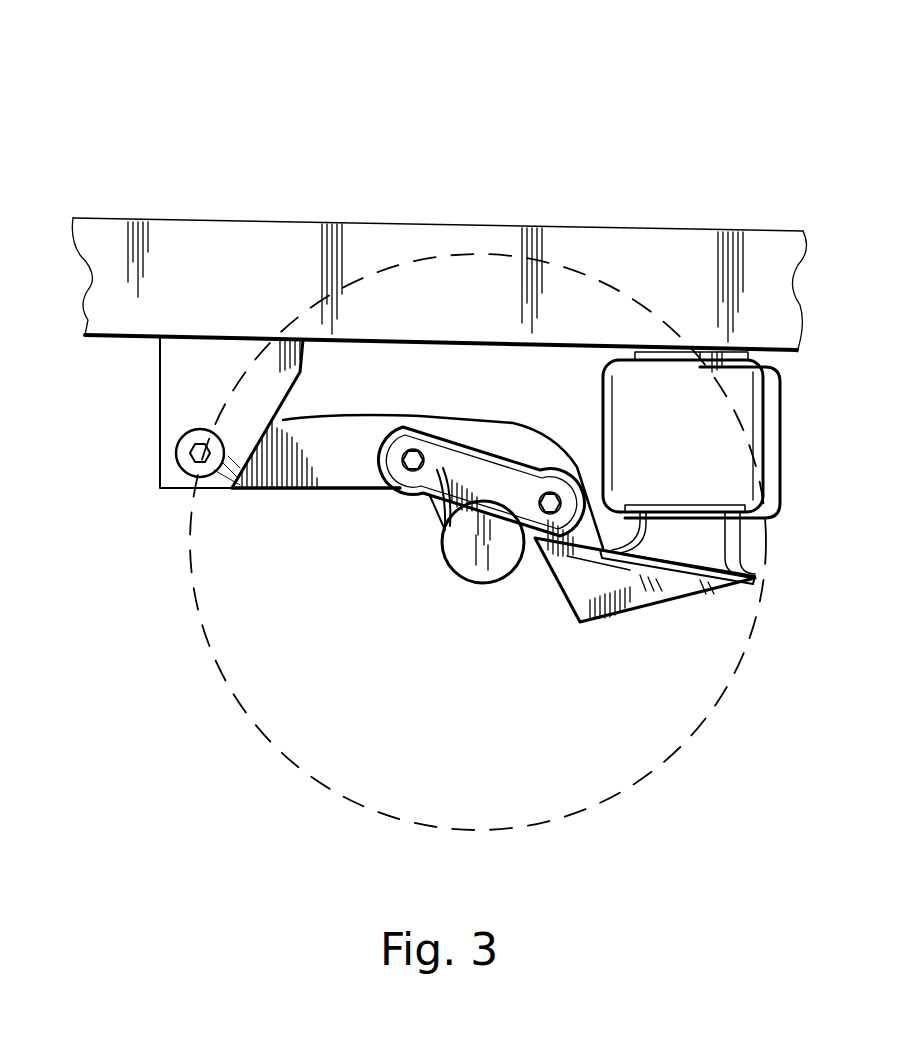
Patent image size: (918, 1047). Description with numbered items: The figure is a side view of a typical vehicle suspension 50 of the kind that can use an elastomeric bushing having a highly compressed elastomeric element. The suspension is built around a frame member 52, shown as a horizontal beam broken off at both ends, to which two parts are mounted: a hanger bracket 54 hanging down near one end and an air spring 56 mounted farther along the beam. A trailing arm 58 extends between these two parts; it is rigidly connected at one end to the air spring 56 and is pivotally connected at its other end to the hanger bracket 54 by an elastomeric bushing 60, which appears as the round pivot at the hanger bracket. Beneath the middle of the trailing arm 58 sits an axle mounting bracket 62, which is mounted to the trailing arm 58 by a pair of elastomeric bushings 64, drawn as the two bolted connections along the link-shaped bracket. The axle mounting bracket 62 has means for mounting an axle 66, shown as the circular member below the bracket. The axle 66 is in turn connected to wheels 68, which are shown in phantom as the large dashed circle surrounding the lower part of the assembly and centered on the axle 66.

The vehicle suspension 50 is at (208, 165).
The frame member 52 is at (120, 290).
The hanger bracket 54 is at (172, 405).
The air spring 56 is at (783, 437).
The trailing arm 58 is at (305, 492).
The elastomeric bushing 60 is at (178, 465).
The axle mounting bracket 62 is at (425, 508).
The elastomeric bushings 64 is at (411, 433).
The axle 66 is at (483, 585).
The wheels 68 is at (745, 656).